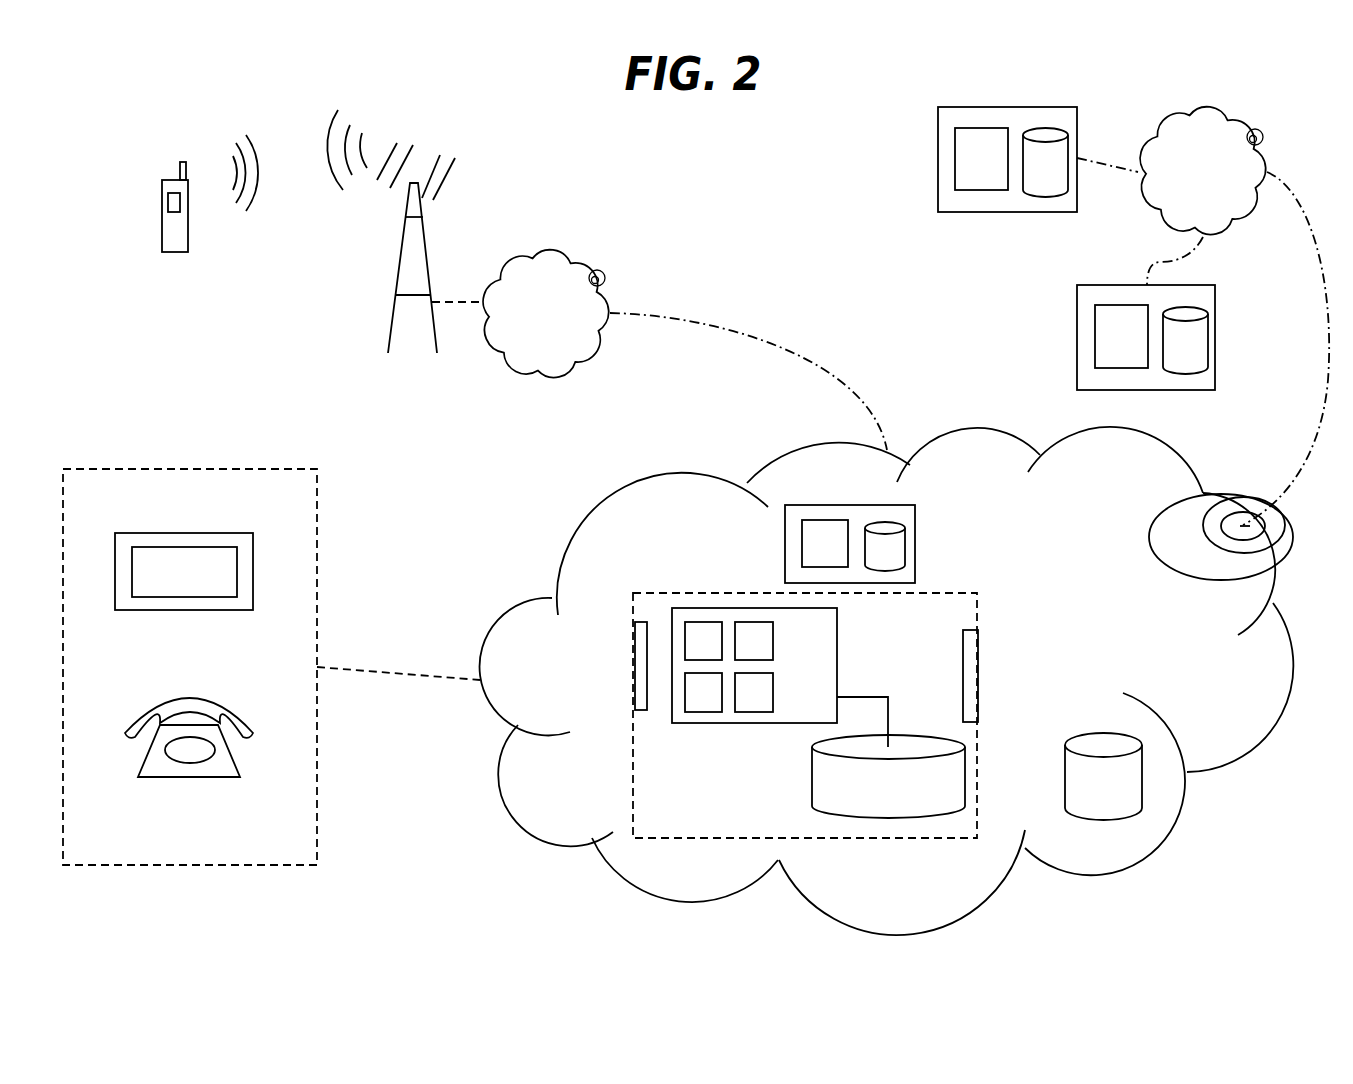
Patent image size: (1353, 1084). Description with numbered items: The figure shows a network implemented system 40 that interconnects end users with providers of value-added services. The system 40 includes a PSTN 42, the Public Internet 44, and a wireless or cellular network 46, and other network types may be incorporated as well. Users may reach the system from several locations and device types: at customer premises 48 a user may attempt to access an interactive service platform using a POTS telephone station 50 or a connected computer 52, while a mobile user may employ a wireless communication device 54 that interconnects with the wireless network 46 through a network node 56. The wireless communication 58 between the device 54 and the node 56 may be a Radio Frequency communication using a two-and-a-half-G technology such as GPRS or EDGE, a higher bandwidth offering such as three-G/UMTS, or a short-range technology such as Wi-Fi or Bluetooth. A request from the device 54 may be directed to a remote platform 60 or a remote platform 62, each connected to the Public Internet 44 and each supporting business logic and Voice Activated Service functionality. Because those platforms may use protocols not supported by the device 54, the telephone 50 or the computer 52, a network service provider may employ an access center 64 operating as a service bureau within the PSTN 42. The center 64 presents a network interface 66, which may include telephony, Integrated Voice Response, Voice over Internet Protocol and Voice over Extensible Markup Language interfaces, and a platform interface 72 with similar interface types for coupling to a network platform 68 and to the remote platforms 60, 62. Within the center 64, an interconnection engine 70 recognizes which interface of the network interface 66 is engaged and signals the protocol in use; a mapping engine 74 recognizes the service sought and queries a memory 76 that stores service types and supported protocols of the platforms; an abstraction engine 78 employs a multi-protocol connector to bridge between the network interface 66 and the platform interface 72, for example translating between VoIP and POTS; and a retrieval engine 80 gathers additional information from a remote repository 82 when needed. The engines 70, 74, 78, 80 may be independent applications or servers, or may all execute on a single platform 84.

The network implemented system 40 is at (1245, 878).
The PSTN 42 is at (1143, 642).
The Public Internet 44 is at (1180, 180).
The wireless or cellular network 46 is at (521, 323).
The customer premises 48 is at (268, 867).
The POTS telephone station 50 is at (178, 777).
The connected computer 52 is at (181, 582).
The wireless communication device 54 is at (160, 252).
The network node 56 is at (390, 317).
The wireless communication 58 is at (278, 172).
The remote platform 60 is at (970, 168).
The remote platform 62 is at (1108, 347).
The access center 64 is at (978, 605).
The network interface 66 is at (633, 697).
The network platform 68 is at (813, 555).
The interconnection engine 70 is at (691, 652).
The platform interface 72 is at (978, 695).
The mapping engine 74 is at (742, 652).
The memory 76 is at (878, 795).
The abstraction engine 78 is at (691, 702).
The retrieval engine 80 is at (754, 692).
The remote repository 82 is at (1093, 793).
The platform 84 is at (754, 702).